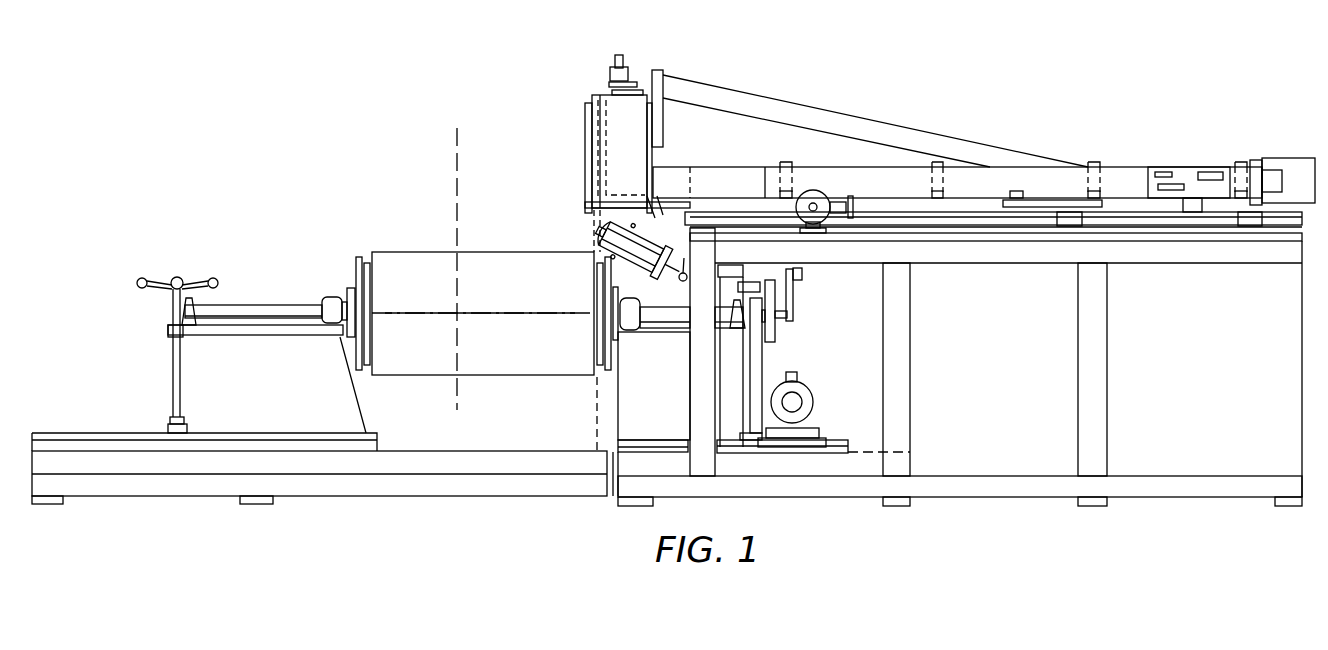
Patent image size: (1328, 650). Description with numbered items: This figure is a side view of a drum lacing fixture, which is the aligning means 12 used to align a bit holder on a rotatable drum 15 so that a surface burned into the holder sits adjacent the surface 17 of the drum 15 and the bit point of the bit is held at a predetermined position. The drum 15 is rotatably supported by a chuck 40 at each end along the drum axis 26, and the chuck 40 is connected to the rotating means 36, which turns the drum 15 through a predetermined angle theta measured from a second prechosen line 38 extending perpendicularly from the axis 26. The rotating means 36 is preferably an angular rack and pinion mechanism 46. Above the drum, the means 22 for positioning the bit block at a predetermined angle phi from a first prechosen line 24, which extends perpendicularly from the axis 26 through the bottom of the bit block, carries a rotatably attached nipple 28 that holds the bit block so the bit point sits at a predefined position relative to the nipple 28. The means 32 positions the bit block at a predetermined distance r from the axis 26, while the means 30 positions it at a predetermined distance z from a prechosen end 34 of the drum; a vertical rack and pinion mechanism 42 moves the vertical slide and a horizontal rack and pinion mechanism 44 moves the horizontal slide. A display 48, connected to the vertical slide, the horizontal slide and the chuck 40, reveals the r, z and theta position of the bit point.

The aligning means 12 is at (724, 16).
The drum 15 is at (427, 294).
The surface of the drum 17 is at (398, 250).
The means for positioning the bit block at a predetermined angle 22 is at (616, 202).
The first prechosen line 24 is at (456, 166).
The axis of the drum 26 is at (503, 312).
The nipple 28 is at (653, 225).
The means for positioning the bit block at a predetermined distance z 30 is at (990, 173).
The means for positioning the bit block at a predetermined distance r 32 is at (602, 100).
The prechosen end of the drum 34 is at (597, 300).
The means for rotating the drum 36 is at (776, 326).
The second prechosen line 38 is at (598, 425).
The chuck 40 is at (268, 355).
The vertical rack and pinion mechanism 42 is at (630, 72).
The horizontal rack and pinion mechanism 44 is at (840, 200).
The angular rack and pinion mechanism 46 is at (742, 330).
The display 48 is at (1185, 172).